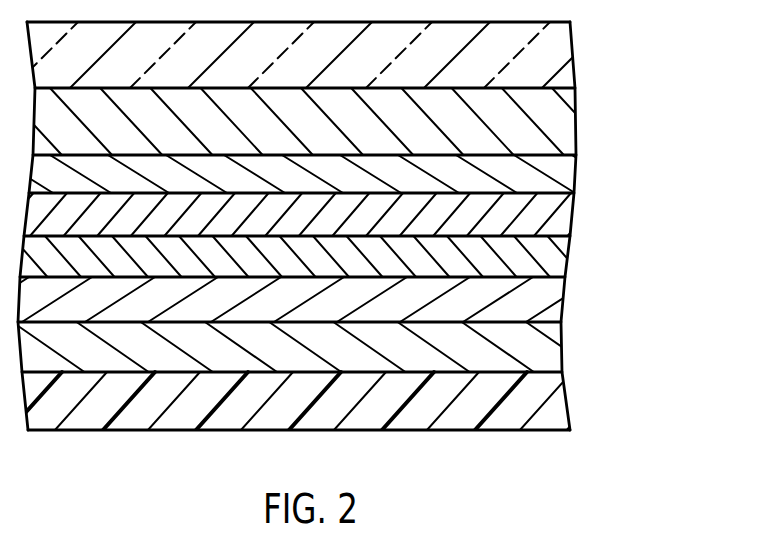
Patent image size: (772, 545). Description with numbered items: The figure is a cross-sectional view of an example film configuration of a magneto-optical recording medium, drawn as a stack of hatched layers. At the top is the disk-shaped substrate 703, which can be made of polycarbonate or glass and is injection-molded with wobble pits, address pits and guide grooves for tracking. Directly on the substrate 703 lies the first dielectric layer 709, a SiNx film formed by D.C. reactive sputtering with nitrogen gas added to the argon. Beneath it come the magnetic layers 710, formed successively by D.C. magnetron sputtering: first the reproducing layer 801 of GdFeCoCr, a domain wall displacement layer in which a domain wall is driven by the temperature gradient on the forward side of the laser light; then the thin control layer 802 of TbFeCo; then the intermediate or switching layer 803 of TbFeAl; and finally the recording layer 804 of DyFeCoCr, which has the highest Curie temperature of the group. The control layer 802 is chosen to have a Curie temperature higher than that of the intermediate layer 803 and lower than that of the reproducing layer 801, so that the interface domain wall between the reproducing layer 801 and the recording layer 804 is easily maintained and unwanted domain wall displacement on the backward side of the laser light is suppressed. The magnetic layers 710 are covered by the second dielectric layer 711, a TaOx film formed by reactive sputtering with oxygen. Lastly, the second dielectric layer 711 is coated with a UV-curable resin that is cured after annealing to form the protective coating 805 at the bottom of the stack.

The substrate 703 is at (560, 60).
The first dielectric layer 709 is at (566, 118).
The magnetic layers 710 is at (362, 236).
The first magnetic layer (reproducing layer) 801 is at (566, 172).
The second magnetic layer (control layer) 802 is at (563, 215).
The third magnetic layer (intermediate layer) 803 is at (557, 258).
The fourth magnetic layer (recording layer) 804 is at (329, 299).
The second dielectric layer 711 is at (554, 352).
The protective coating 805 is at (556, 397).